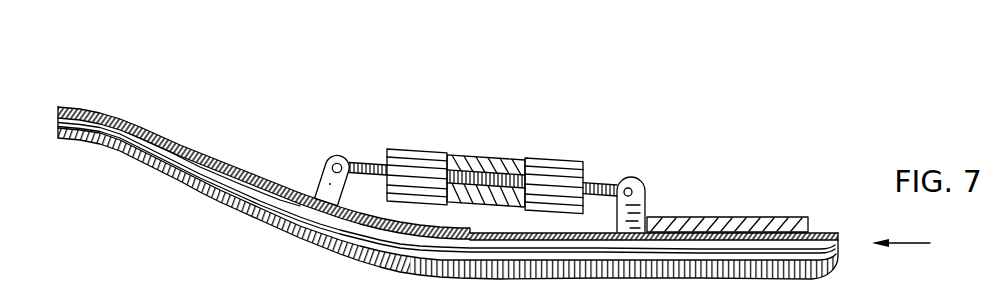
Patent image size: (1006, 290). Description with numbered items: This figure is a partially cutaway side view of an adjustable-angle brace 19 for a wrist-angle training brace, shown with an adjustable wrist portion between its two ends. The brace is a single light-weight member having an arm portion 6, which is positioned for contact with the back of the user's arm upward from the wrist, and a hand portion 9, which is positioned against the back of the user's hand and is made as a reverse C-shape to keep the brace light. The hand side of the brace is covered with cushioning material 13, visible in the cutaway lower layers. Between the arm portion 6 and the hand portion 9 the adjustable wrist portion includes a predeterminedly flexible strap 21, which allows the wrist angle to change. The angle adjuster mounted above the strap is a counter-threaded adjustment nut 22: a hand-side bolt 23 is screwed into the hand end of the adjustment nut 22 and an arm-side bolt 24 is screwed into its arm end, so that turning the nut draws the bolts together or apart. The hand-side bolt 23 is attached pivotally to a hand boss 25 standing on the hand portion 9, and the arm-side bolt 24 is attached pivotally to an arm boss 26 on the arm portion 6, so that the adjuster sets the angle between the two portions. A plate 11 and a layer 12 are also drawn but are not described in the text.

The arm portion 6 is at (750, 250).
The hand portion 9 is at (170, 156).
The heel plate 11 is at (711, 219).
The intermediate layer 12 is at (222, 162).
The cushioning material 13 is at (232, 207).
The adjustable-angle brace 19 is at (914, 243).
The flexible strap 21 is at (274, 185).
The counter-threaded adjustment nut 22 is at (477, 155).
The hand-side bolt 23 is at (368, 165).
The arm-side bolt 24 is at (597, 181).
The hand boss 25 is at (329, 176).
The arm boss 26 is at (631, 177).